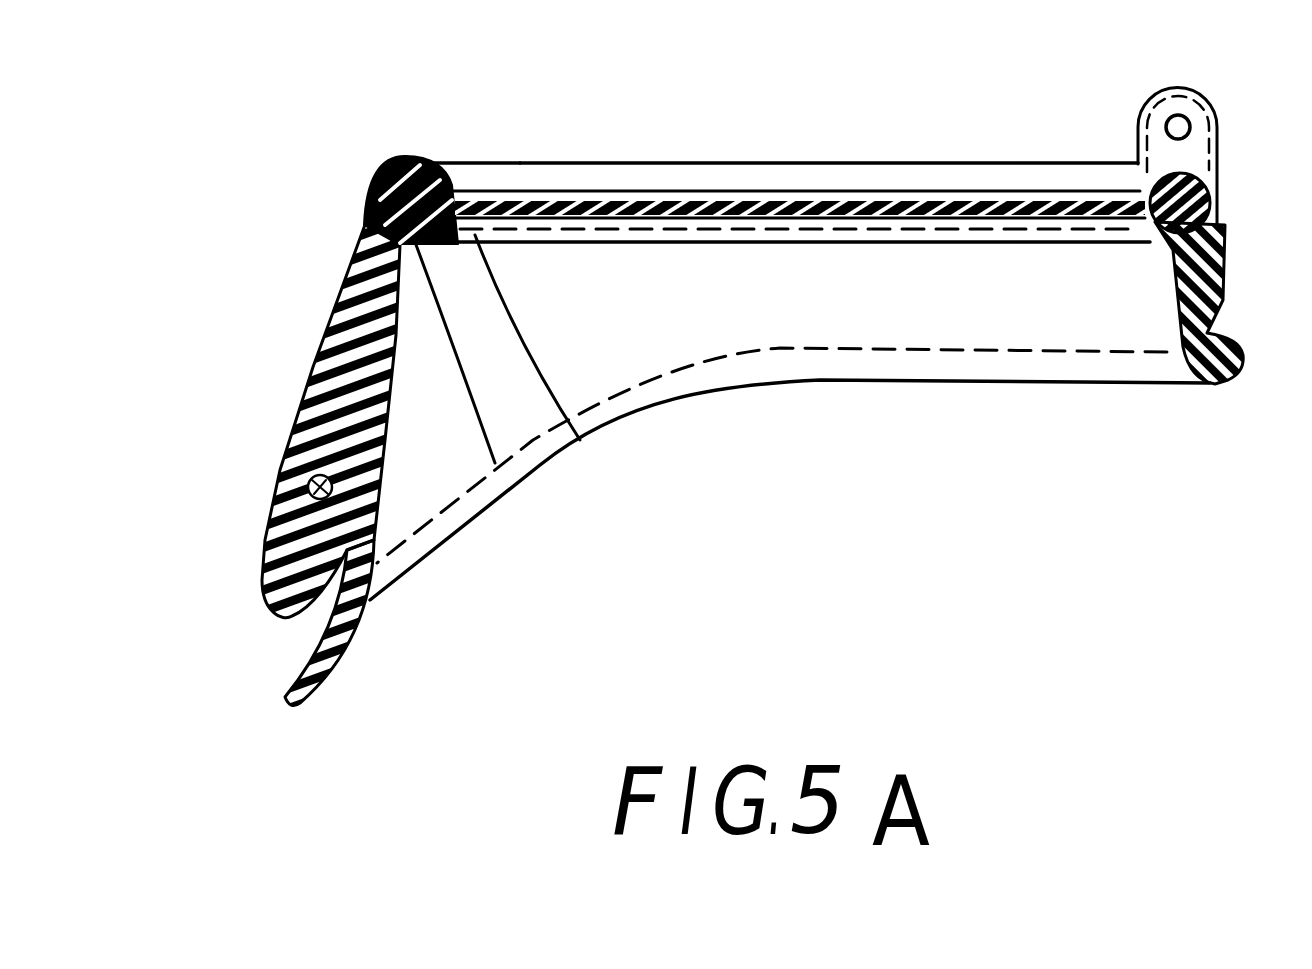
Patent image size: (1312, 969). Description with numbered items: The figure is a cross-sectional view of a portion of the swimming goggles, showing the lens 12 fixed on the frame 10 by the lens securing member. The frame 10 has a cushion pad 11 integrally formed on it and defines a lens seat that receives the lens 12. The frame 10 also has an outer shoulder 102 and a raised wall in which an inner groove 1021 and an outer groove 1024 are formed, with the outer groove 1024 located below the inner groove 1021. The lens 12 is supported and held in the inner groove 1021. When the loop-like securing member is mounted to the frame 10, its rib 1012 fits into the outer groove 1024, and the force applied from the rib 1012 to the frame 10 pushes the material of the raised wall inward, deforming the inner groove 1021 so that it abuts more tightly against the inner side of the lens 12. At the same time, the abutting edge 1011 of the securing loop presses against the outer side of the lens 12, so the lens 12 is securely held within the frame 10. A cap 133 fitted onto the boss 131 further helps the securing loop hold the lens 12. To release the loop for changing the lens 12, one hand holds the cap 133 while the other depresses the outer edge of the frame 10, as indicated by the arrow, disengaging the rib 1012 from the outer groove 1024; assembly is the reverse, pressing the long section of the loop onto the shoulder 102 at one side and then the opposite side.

The frame 10 is at (310, 363).
The outer shoulder 102 is at (367, 218).
The rib 1012 is at (398, 163).
The abutting edge 1011 is at (433, 163).
The cushion pad 11 is at (687, 163).
The lens 12 is at (830, 200).
The cap 133 is at (1137, 135).
The boss 131 is at (1212, 143).
The inner groove 1021 is at (580, 440).
The outer groove 1024 is at (495, 463).